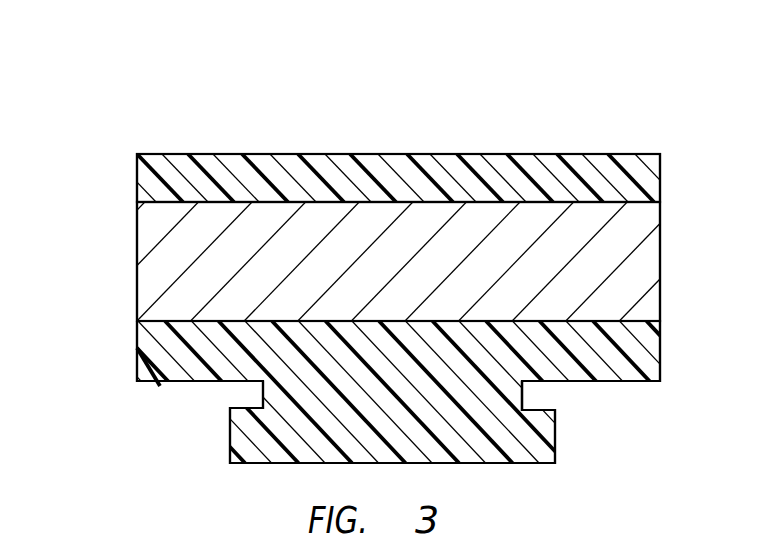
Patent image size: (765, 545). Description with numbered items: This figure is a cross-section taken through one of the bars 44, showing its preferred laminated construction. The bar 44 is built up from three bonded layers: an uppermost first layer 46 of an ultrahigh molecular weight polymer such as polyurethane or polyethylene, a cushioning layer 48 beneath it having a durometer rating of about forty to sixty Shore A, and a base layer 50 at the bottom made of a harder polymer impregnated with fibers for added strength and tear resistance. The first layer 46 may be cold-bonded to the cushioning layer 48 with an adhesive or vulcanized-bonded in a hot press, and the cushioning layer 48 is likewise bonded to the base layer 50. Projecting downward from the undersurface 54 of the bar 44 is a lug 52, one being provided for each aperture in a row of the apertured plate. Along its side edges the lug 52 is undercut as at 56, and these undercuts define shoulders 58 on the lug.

The bar 44 is at (521, 128).
The first layer 46 is at (137, 177).
The cushioning layer 48 is at (137, 265).
The base layer 50 is at (137, 350).
The projection 52 is at (230, 443).
The undersurface 54 is at (157, 386).
The undercut 56 is at (540, 397).
The shoulder 58 is at (538, 410).